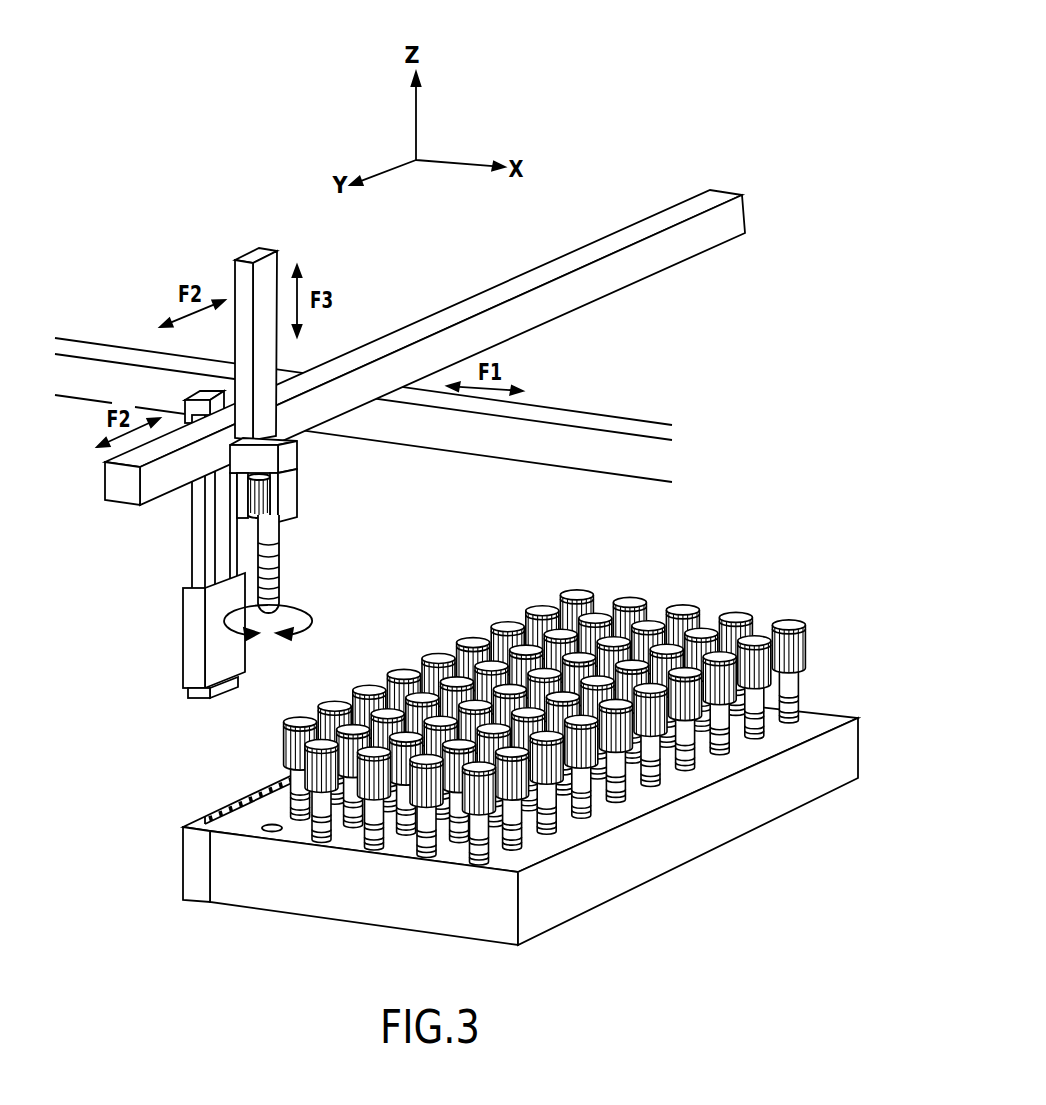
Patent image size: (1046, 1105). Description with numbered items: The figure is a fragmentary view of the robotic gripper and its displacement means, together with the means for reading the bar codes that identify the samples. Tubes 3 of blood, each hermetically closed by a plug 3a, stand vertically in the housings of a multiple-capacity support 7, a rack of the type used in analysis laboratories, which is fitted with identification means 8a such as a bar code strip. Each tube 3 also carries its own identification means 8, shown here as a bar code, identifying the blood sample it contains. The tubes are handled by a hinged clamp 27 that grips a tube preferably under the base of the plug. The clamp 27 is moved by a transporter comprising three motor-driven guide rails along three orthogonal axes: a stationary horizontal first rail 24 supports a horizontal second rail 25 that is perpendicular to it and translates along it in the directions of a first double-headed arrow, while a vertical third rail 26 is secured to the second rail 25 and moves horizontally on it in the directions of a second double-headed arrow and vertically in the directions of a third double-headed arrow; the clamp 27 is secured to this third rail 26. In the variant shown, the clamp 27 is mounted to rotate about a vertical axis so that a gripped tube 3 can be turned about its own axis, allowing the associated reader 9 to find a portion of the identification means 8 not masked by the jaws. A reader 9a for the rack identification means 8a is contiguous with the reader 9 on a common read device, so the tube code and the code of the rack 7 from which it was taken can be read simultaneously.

The tube 3 is at (561, 718).
The plug 3a is at (789, 624).
The support 7 is at (357, 908).
The identification means 8 is at (299, 561).
The identification means 8a is at (236, 808).
The reader 9 is at (189, 632).
The reader 9a is at (201, 697).
The first rail 24 is at (594, 423).
The second rail 25 is at (522, 287).
The third rail 26 is at (240, 273).
The clamp 27 is at (288, 458).